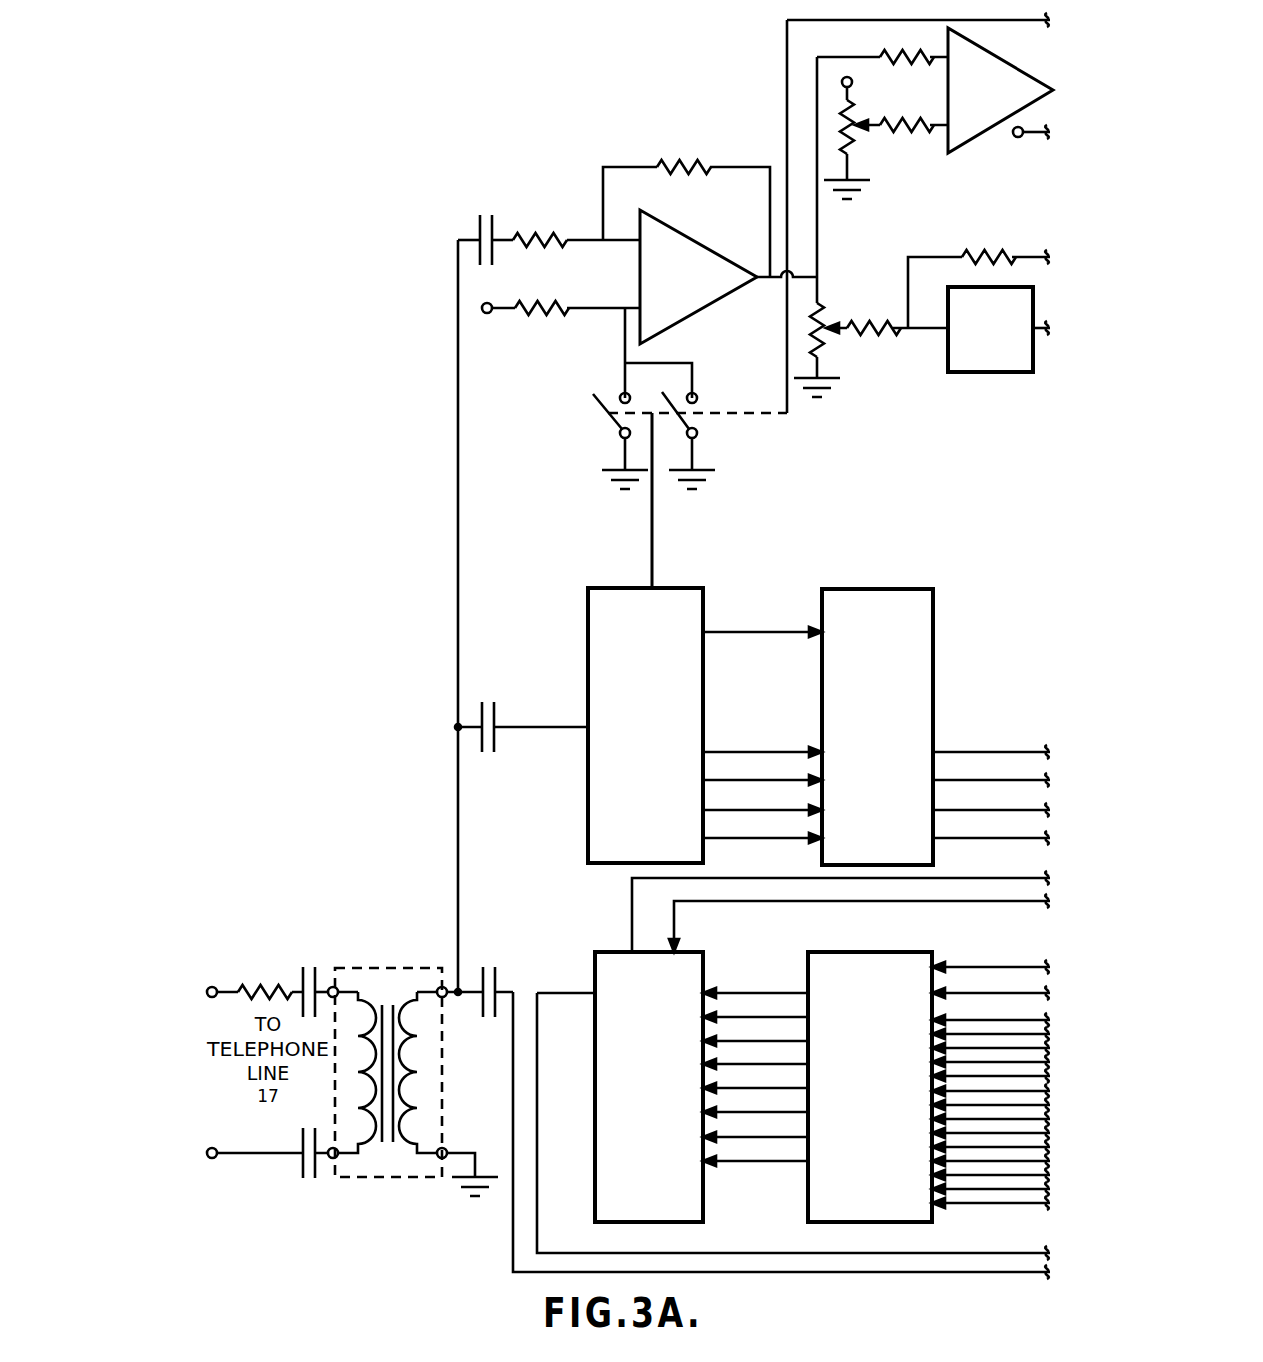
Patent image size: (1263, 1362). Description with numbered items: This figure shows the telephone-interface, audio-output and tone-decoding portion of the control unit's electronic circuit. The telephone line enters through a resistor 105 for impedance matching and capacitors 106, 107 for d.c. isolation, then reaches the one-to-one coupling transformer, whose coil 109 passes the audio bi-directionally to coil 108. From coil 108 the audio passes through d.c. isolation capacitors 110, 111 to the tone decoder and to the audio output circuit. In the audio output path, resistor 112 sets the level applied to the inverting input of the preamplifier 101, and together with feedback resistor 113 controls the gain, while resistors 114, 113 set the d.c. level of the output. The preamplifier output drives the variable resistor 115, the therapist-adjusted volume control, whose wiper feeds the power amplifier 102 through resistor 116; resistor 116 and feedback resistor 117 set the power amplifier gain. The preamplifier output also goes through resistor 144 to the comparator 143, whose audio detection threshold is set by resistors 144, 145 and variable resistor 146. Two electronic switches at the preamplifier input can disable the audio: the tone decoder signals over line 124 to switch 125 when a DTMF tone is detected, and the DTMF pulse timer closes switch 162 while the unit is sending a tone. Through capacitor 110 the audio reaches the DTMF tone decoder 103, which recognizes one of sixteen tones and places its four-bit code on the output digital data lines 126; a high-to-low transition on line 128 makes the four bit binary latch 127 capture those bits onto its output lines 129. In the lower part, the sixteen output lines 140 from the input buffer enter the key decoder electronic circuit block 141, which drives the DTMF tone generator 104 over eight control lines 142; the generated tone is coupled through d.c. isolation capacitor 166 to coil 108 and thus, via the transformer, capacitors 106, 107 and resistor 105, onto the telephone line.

The preamplifier 101 is at (692, 238).
The power amplifier 102 is at (987, 375).
The DTMF tone decoder 103 is at (588, 783).
The DTMF tone generator 104 is at (610, 952).
The resistor 105 is at (262, 991).
The capacitor 106 is at (303, 970).
The capacitor 107 is at (288, 1160).
The coil 108 is at (425, 1110).
The coil 109 is at (358, 1108).
The d.c. isolation capacitor 110 is at (497, 710).
The d.c. isolation capacitor 111 is at (480, 233).
The resistor 112 is at (530, 238).
The feedback resistor 113 is at (690, 166).
The resistor 114 is at (548, 320).
The variable resistor 115 is at (829, 347).
The resistor 116 is at (876, 325).
The feedback resistor 117 is at (973, 256).
The line 124 is at (652, 560).
The electronic switch 125 is at (600, 405).
The output digital data lines 126 is at (742, 752).
The four bit binary latch 127 is at (850, 589).
The line 128 is at (733, 632).
The output lines 129 is at (972, 752).
The output lines 140 is at (369, 968).
The key decoder electronic circuit block 141 is at (832, 952).
The control lines 142 is at (775, 1161).
The comparator 143 is at (1042, 83).
The resistor 144 is at (897, 59).
The resistor 145 is at (912, 125).
The variable resistor 146 is at (855, 143).
The electronic switch 162 is at (665, 392).
The d.c. isolation capacitor 166 is at (501, 977).